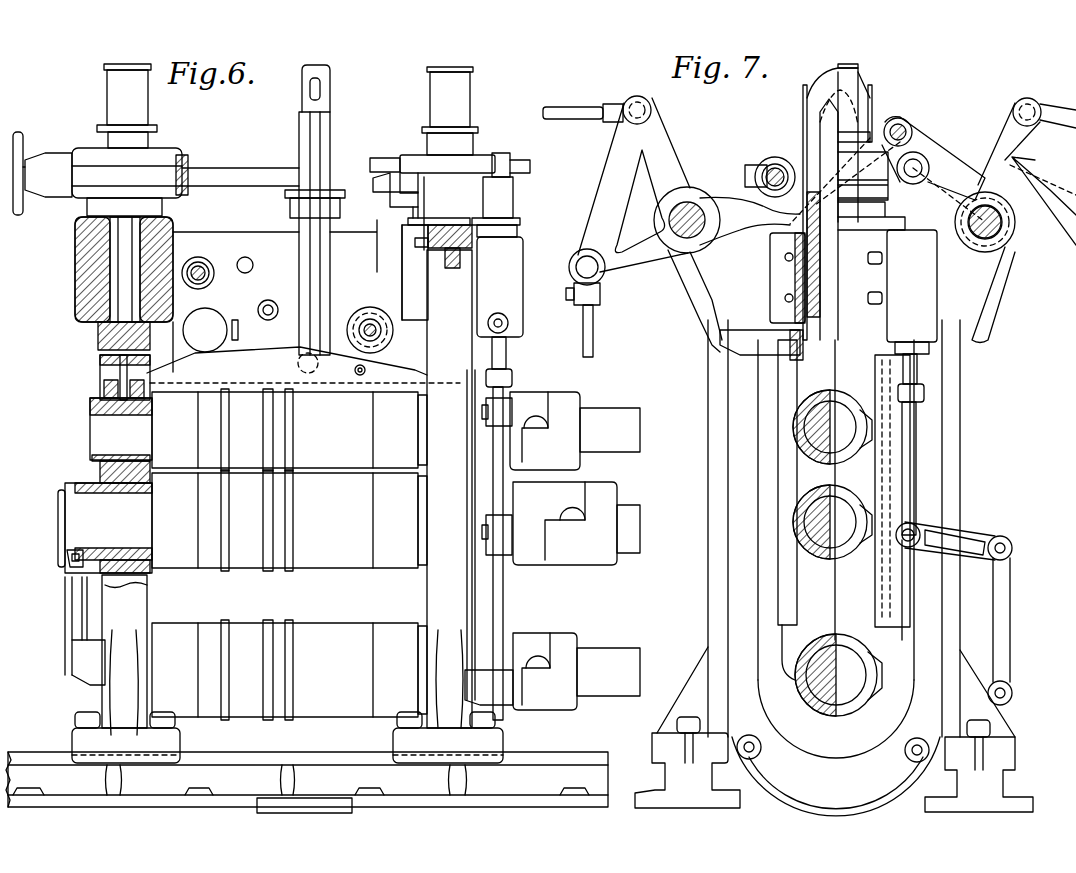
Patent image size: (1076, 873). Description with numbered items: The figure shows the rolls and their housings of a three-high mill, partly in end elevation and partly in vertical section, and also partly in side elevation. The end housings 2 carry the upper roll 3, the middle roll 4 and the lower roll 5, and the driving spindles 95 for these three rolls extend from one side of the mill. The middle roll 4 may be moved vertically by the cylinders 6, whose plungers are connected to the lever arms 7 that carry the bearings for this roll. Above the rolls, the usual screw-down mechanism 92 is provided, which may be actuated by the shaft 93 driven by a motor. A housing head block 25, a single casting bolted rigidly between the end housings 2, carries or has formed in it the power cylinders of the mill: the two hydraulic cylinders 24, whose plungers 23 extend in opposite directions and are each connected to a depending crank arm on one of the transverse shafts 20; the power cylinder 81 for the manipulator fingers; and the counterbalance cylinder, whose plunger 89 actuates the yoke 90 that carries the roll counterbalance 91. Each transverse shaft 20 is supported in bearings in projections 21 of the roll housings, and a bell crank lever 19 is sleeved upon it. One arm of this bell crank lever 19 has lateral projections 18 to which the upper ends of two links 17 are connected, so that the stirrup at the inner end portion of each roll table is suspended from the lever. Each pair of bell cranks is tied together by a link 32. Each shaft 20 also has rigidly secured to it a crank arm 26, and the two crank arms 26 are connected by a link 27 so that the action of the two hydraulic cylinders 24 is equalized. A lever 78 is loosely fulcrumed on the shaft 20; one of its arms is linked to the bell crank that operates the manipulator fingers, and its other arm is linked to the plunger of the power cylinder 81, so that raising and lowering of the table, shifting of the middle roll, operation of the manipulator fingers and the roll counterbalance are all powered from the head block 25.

In FIG. 6, the end housings 2 is at (307, 531).
In FIG. 7, the end housings 2 is at (708, 583).
In FIG. 6, the upper roll 3 is at (289, 430).
In FIG. 7, the upper roll 3 is at (806, 428).
In FIG. 6, the middle roll 4 is at (289, 520).
In FIG. 7, the middle roll 4 is at (803, 523).
In FIG. 6, the lower roll 5 is at (289, 670).
In FIG. 7, the lower roll 5 is at (806, 678).
In FIG. 6, the cylinders 6 is at (500, 281).
In FIG. 7, the cylinders 6 is at (902, 292).
In FIG. 6, the lever arms 7 is at (504, 548).
In FIG. 7, the lever arms 7 is at (965, 543).
In FIG. 7, the links 17 is at (583, 339).
In FIG. 7, the lateral projections 18 is at (576, 252).
In FIG. 7, the bell crank lever 19 is at (622, 176).
In FIG. 7, the transverse shaft 20 is at (672, 236).
In FIG. 7, the projections 21 is at (696, 281).
In FIG. 6, the plunger 23 is at (378, 337).
In FIG. 6, the hydraulic cylinder 24 is at (210, 330).
In FIG. 7, the hydraulic cylinder 24 is at (761, 345).
In FIG. 6, the housing head block 25 is at (303, 301).
In FIG. 7, the housing head block 25 is at (770, 275).
In FIG. 7, the crank arm 26 is at (733, 198).
In FIG. 7, the link 27 is at (875, 150).
In FIG. 7, the link 32 is at (572, 107).
In FIG. 7, the lever 78 is at (1020, 183).
In FIG. 6, the power cylinder 81 is at (200, 262).
In FIG. 6, the plunger 89 is at (330, 142).
In FIG. 7, the plunger 89 is at (820, 127).
In FIG. 6, the yoke 90 is at (322, 73).
In FIG. 7, the yoke 90 is at (828, 80).
In FIG. 6, the roll counterbalance 91 is at (330, 125).
In FIG. 7, the roll counterbalance 91 is at (803, 105).
In FIG. 6, the screw-down mechanism 92 is at (100, 140).
In FIG. 6, the shaft 93 is at (235, 168).
In FIG. 7, the shaft 93 is at (775, 160).
In FIG. 6, the driving spindles 95 is at (576, 551).